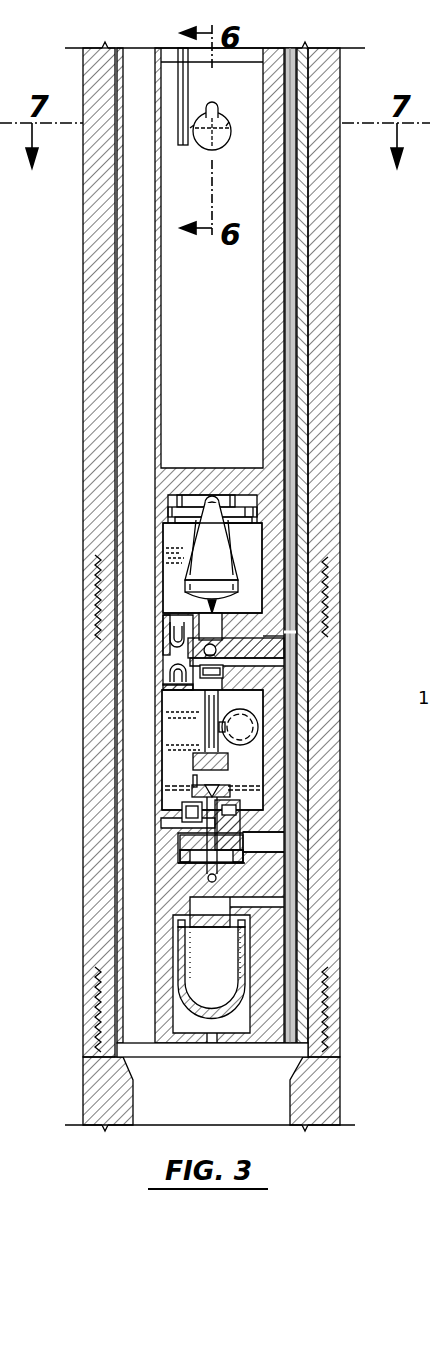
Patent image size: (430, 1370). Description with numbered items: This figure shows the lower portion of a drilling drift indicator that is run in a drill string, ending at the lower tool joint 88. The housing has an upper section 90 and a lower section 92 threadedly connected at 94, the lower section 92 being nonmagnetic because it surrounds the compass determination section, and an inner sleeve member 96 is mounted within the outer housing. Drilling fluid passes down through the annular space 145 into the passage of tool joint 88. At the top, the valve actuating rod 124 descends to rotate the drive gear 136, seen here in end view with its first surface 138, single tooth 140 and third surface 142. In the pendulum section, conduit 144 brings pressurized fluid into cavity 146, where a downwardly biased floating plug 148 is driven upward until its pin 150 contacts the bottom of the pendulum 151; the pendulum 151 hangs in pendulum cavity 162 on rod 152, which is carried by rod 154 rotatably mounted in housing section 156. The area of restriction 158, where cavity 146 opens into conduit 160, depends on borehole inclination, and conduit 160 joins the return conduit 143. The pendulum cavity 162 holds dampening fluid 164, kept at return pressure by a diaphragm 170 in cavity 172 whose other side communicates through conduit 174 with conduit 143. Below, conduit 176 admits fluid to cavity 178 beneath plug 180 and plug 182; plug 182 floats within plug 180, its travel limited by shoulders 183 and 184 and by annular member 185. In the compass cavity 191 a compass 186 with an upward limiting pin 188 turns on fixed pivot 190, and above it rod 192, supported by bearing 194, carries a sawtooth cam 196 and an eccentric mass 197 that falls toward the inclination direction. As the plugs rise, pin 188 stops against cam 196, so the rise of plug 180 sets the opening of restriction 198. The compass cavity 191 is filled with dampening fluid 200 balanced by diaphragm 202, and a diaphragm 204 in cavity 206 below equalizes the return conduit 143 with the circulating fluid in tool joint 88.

The lower tool joint 88 is at (340, 1000).
The upper section of housing 90 is at (340, 342).
The lower section of housing 92 is at (340, 568).
The threaded connection 94 is at (326, 589).
The inner sleeve member 96 is at (305, 403).
The valve actuating rod 124 is at (183, 148).
The drive gear 136 is at (222, 149).
The first surface 138 is at (193, 122).
The single tooth 140 is at (215, 107).
The third surface 142 is at (226, 125).
The return conduit 143 is at (290, 287).
The conduit 144 is at (214, 648).
The annular space 145 is at (151, 112).
The cavity 146 is at (204, 652).
The floating plug 148 is at (218, 622).
The pin 150 is at (205, 614).
The pendulum 151 is at (198, 497).
The rod 152 is at (210, 500).
The rod 154 is at (235, 500).
The housing section 156 is at (278, 540).
The restriction 158 is at (226, 641).
The conduit 160 is at (278, 636).
The pendulum cavity 162 is at (166, 524).
The dampening fluid 164 is at (172, 552).
The diaphragm 170 is at (170, 632).
The cavity 172 is at (196, 640).
The conduit 174 is at (223, 666).
The conduit 176 is at (206, 882).
The cavity 178 is at (186, 864).
The plug 180 is at (186, 858).
The plug 182 is at (190, 846).
The limiting shoulder 183 is at (238, 803).
The limiting shoulder 184 is at (236, 817).
The annular member 185 is at (186, 806).
The compass 186 is at (228, 784).
The limiting pin 188 is at (192, 778).
The pivot 190 is at (222, 784).
The compass cavity 191 is at (163, 716).
The rod 192 is at (221, 712).
The bearing 194 is at (220, 673).
The cam 196 is at (194, 760).
The eccentric mass 197 is at (250, 728).
The restriction 198 is at (236, 848).
The dampening fluid 200 is at (183, 731).
The diaphragm 202 is at (170, 681).
The diaphragm 204 is at (186, 948).
The cavity 206 is at (176, 992).